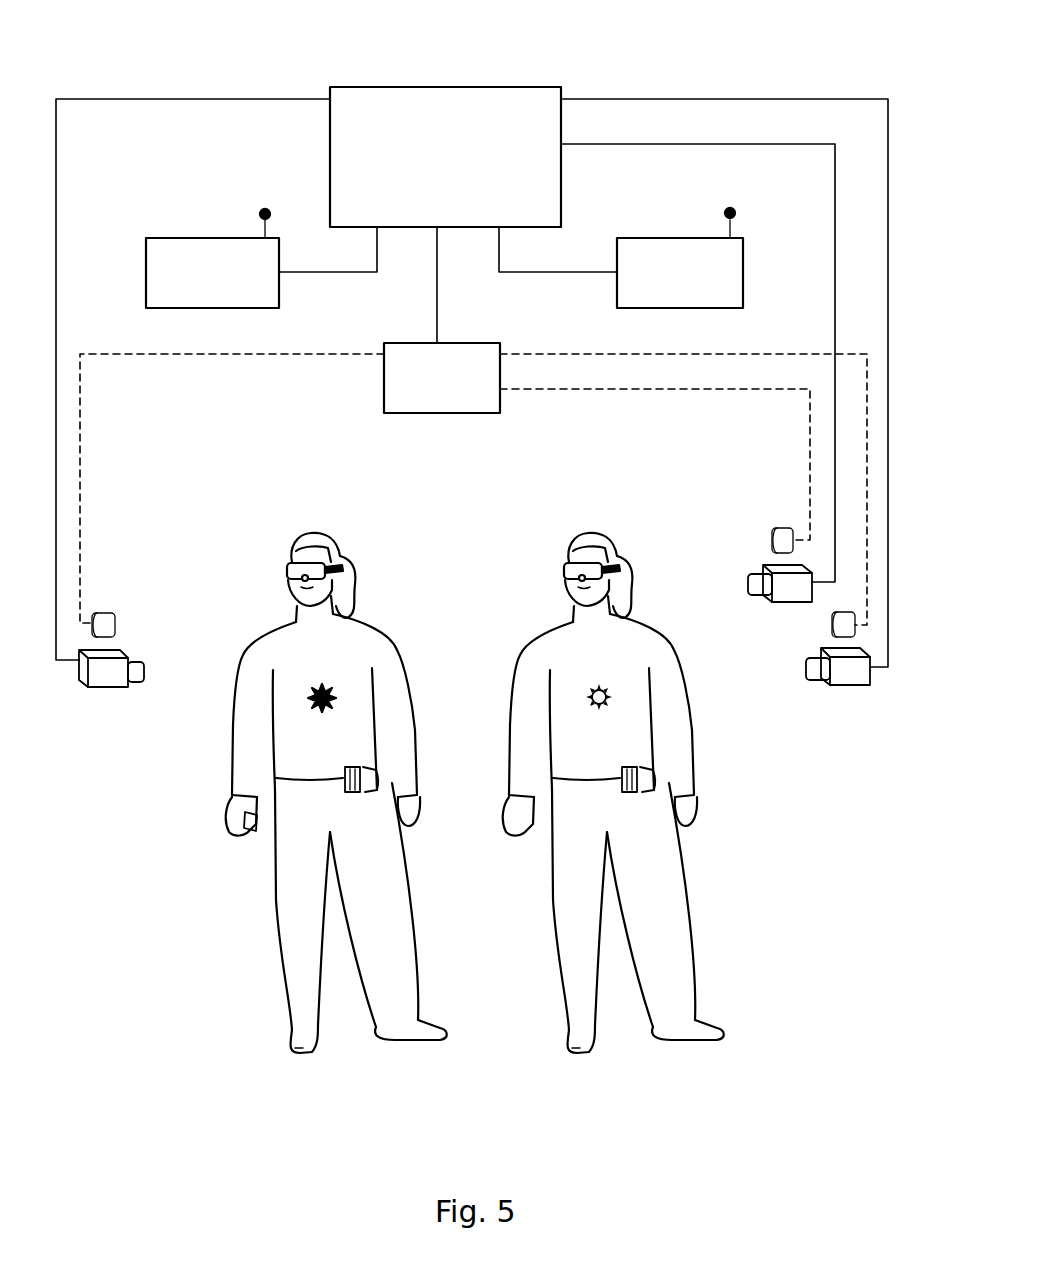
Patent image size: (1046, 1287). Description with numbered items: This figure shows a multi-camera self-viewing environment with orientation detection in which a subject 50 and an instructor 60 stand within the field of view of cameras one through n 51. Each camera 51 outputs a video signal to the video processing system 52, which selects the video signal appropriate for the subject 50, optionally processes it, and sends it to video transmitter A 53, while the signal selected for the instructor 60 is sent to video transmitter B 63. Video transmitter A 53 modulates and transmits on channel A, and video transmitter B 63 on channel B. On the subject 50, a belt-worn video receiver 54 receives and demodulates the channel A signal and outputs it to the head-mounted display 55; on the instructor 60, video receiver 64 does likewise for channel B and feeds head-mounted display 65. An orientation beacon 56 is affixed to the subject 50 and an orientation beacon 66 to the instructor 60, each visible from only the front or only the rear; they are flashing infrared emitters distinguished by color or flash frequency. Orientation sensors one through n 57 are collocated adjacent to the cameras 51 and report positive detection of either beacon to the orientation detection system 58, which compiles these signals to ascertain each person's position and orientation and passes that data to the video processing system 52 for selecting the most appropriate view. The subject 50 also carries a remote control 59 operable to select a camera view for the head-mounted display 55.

The subject 50 is at (323, 793).
The cameras 1 through n 51 is at (105, 693).
The video processing system 52 is at (513, 79).
The video transmitter A 53 is at (184, 234).
The video receiver 54 is at (358, 797).
The head-mounted display 55 is at (278, 569).
The orientation beacon 56 is at (338, 685).
The orientation sensors 1 through n 57 is at (107, 607).
The orientation detection system 58 is at (413, 417).
The remote control 59 is at (255, 837).
The instructor 60 is at (599, 793).
The video transmitter B 63 is at (635, 234).
The video receiver 64 is at (635, 797).
The head-mounted display 65 is at (555, 570).
The orientation beacon 66 is at (617, 685).